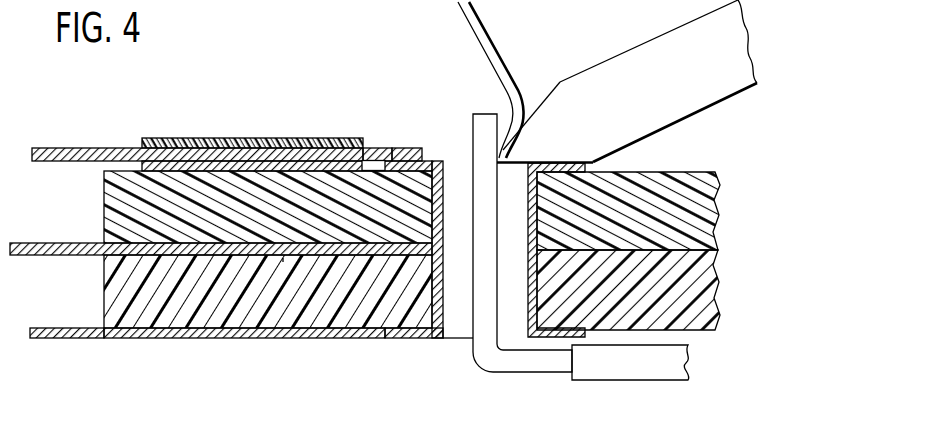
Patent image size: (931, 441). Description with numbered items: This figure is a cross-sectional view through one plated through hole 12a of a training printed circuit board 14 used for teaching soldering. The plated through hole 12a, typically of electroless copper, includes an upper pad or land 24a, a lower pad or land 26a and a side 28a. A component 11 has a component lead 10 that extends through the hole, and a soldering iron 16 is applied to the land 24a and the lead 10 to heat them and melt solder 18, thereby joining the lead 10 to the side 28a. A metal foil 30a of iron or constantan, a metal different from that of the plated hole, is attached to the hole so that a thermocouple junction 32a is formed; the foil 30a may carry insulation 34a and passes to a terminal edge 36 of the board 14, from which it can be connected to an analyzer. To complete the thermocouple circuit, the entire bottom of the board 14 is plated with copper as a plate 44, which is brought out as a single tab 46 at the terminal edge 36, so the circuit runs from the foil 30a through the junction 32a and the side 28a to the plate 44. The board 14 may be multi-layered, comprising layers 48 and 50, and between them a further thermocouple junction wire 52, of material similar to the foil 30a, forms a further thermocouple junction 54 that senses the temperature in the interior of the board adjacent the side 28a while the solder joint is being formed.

The component lead 10 is at (488, 207).
The component 11 is at (690, 368).
The plated through hole 12a is at (457, 187).
The printed circuit board 14 is at (675, 172).
The soldering iron 16 is at (717, 70).
The solder 18 is at (478, 30).
The pad or land 24a is at (427, 163).
The pad or land 26a is at (410, 329).
The side of plated through hole 28a is at (442, 290).
The metal foil 30a is at (373, 149).
The thermocouple junction 32a is at (398, 149).
The insulation 34a is at (195, 141).
The terminal edge 36 is at (104, 207).
The plate 44 is at (208, 338).
The tab 46 is at (67, 331).
The layer 48 is at (122, 180).
The layer 50 is at (133, 302).
The thermocouple junction wire 52 is at (283, 262).
The further thermocouple junction 54 is at (442, 246).